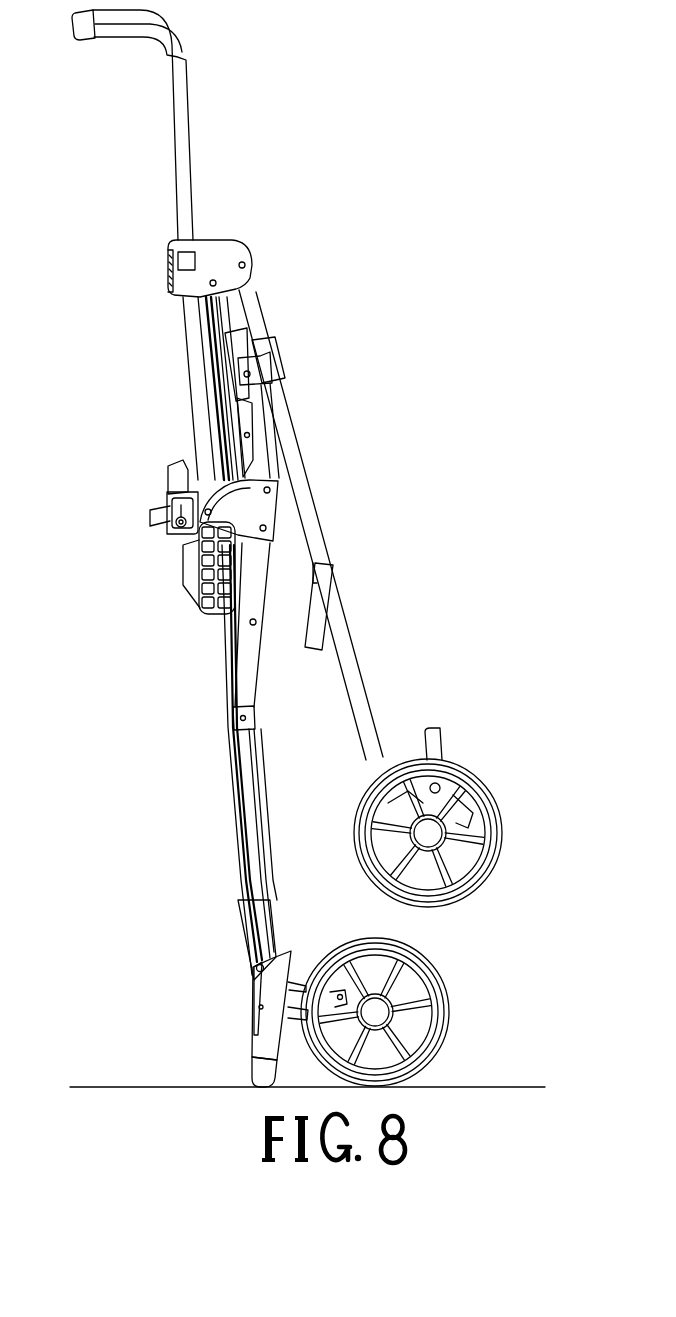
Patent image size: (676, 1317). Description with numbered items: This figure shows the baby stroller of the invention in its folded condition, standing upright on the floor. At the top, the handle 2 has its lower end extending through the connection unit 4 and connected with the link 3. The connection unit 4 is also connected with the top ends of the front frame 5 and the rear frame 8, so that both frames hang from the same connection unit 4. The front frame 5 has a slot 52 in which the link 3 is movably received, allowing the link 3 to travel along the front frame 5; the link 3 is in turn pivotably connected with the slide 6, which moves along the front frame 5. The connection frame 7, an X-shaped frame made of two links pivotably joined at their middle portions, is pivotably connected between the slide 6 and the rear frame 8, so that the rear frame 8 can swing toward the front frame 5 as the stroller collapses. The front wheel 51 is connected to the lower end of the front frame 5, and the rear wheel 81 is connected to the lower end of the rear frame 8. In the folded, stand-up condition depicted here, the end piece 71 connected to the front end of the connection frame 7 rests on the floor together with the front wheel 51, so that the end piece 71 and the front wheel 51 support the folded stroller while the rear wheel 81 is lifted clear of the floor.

The handle 2 is at (183, 137).
The link 3 is at (243, 818).
The connection unit 4 is at (218, 243).
The front frame 5 is at (234, 755).
The slot 52 is at (258, 778).
The slide 6 is at (252, 977).
The connection frame 7 is at (273, 997).
The end piece 71 is at (263, 1072).
The rear frame 8 is at (349, 652).
The rear wheel 81 is at (496, 850).
The front wheel 51 is at (450, 1025).